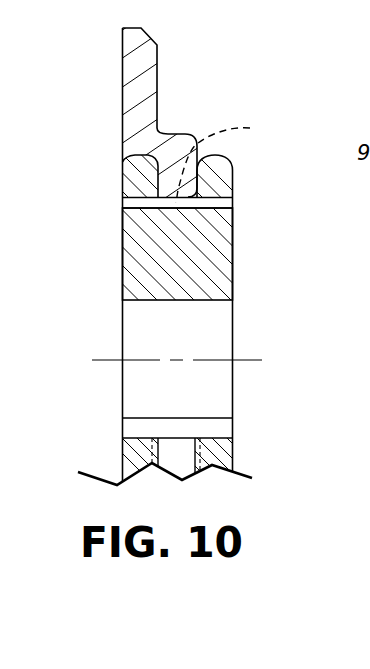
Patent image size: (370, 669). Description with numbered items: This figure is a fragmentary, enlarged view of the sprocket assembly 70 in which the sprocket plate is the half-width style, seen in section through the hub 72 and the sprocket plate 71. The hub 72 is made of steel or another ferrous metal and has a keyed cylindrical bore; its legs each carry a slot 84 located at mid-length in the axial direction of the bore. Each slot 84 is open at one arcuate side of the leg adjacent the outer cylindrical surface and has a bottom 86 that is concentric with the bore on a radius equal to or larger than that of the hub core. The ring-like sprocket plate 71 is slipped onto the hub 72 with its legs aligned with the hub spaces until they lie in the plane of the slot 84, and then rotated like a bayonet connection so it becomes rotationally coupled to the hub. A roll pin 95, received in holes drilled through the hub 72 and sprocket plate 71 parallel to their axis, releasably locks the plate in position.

The sprocket assembly 70 is at (84, 218).
The sprocket plate 71 is at (166, 69).
The hub 72 is at (240, 235).
The slot 84 is at (158, 188).
The bottom 86 is at (228, 161).
The roll pin 95 is at (233, 204).